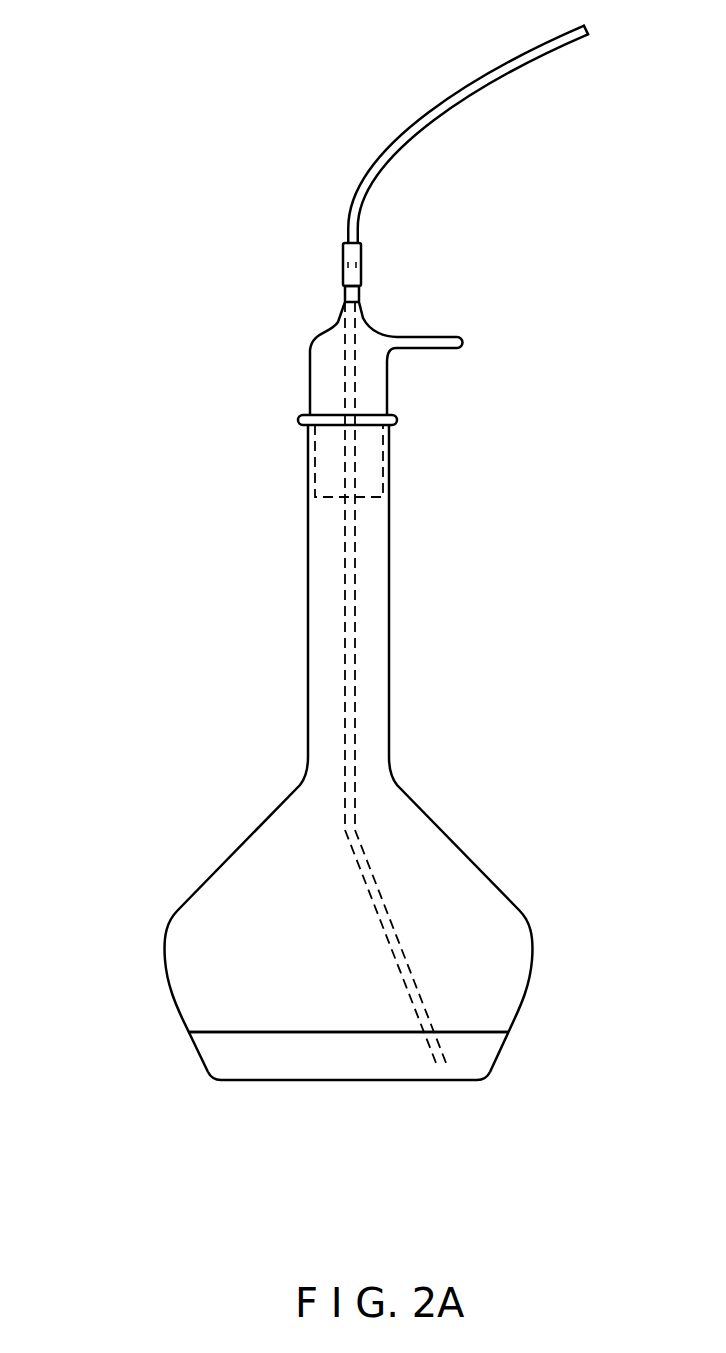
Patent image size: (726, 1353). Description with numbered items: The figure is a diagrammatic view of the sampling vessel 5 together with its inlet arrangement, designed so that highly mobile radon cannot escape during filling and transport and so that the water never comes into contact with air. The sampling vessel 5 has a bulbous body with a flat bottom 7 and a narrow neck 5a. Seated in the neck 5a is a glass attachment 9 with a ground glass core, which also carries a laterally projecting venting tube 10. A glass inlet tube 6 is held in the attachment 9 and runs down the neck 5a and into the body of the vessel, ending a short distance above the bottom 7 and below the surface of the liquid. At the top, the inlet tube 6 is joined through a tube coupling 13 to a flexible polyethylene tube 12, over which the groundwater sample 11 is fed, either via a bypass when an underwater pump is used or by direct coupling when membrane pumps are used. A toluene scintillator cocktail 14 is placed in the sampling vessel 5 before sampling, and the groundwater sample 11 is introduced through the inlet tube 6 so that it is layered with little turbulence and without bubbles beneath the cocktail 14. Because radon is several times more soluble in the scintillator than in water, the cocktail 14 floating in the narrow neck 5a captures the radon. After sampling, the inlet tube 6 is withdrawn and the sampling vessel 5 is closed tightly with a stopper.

The sampling vessel 5 is at (167, 942).
The neck 5a is at (390, 602).
The inlet tube 6 is at (350, 690).
The bottom 7 is at (350, 1080).
The attachment 9 is at (309, 340).
The venting tube 10 is at (461, 349).
The groundwater sample 11 is at (272, 1072).
The polyethylene tube 12 is at (480, 90).
The tube coupling 13 is at (360, 282).
The cocktail 14 is at (452, 1030).